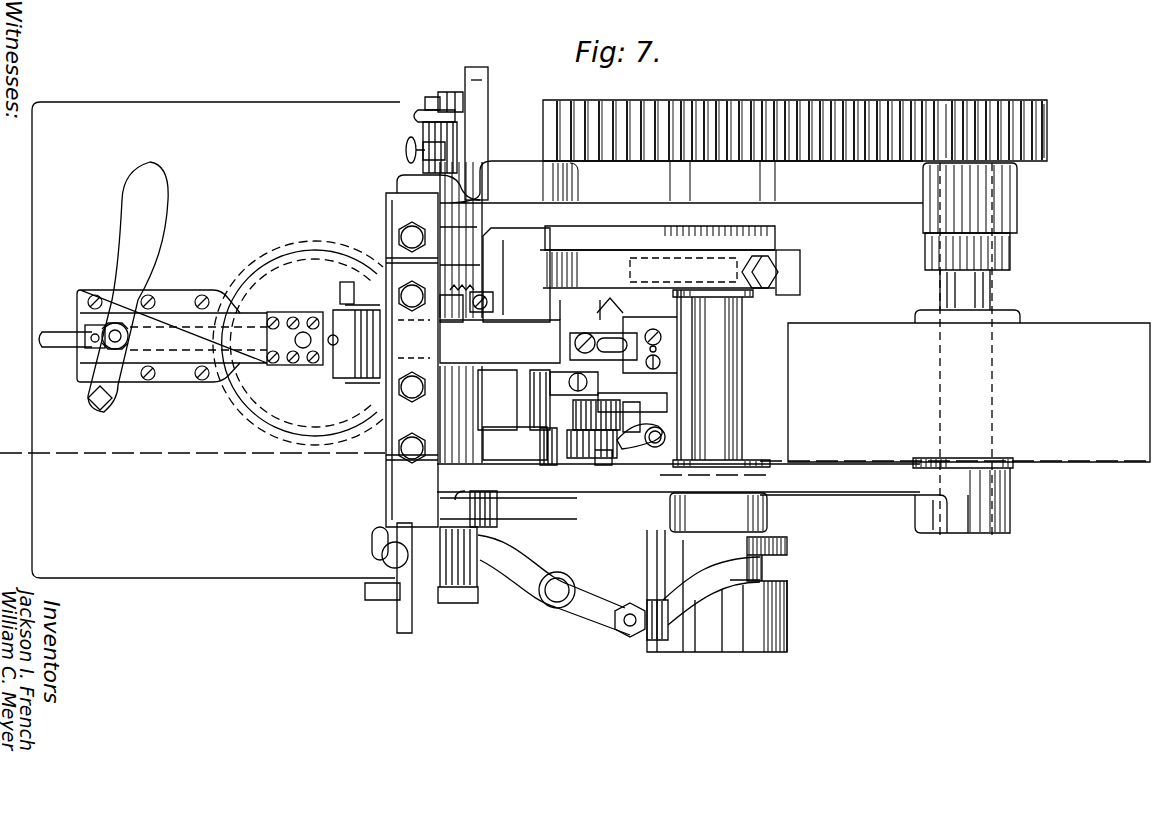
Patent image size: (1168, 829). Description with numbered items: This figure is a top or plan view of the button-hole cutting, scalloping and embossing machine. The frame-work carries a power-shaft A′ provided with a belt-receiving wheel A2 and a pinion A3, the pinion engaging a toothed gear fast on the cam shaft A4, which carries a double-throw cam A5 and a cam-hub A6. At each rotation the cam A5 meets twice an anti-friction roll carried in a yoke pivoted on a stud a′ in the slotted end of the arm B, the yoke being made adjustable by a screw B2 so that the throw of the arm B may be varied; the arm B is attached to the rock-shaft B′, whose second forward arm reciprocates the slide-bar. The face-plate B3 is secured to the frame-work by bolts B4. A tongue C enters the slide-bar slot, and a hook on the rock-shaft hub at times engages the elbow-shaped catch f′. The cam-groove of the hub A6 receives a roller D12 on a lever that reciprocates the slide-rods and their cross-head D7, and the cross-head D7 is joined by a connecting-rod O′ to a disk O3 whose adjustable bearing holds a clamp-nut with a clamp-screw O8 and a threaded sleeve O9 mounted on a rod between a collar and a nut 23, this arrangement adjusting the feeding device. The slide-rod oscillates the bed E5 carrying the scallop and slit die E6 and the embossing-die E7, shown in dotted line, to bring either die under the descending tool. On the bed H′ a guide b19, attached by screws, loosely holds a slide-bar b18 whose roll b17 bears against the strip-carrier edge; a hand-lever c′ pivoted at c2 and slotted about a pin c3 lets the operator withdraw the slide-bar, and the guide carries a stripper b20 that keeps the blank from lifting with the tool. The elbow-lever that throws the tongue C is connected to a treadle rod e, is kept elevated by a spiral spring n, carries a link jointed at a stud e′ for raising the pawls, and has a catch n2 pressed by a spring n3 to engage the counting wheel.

The nut 23 is at (426, 103).
The connecting-rod O′ is at (448, 92).
The disk O3 is at (479, 70).
The clamp-screw O8 is at (405, 153).
The threaded sleeve O9 is at (420, 128).
The pinion A3 is at (995, 116).
The stud a′ is at (642, 250).
The arm B is at (640, 262).
The screw B2 is at (740, 262).
The double-throw cam A5 is at (790, 272).
The power-shaft A′ is at (982, 300).
The rock-shaft B′ is at (681, 241).
The elbow-shaped catch f′ is at (560, 308).
The guide block K′ is at (638, 320).
The tongue C is at (598, 338).
The cam shaft A4 is at (742, 380).
The belt-receiving wheel A2 is at (969, 428).
The stud e′ is at (560, 410).
The rod e is at (560, 420).
The spring n3 is at (640, 432).
The spiral spring n is at (641, 436).
The catch n2 is at (632, 450).
The oscillating bed E5 is at (292, 262).
The scallop and slit die E6 is at (352, 298).
The embossing-die E7 is at (380, 348).
The stripper b20 is at (308, 312).
The slide-bar b18 is at (346, 304).
The roll b17 is at (345, 372).
The guide b19 is at (200, 378).
The hand-lever c′ is at (130, 247).
The pin or stud c3 is at (90, 332).
The pivot c2 is at (114, 406).
The bed H′ is at (216, 340).
The bolts B4 is at (400, 492).
The face-plate B3 is at (415, 503).
The cross-head D7 is at (535, 598).
The roller or stud D12 is at (618, 630).
The cam-hub A6 is at (698, 653).